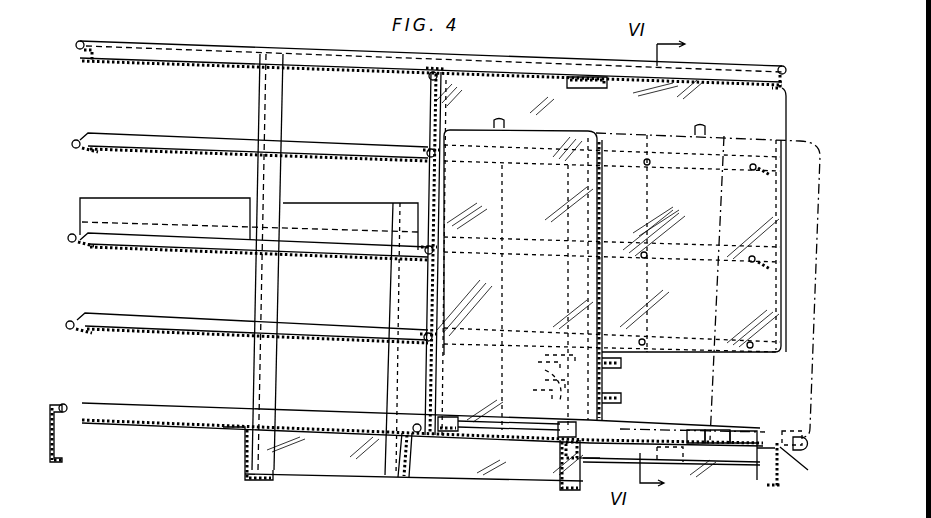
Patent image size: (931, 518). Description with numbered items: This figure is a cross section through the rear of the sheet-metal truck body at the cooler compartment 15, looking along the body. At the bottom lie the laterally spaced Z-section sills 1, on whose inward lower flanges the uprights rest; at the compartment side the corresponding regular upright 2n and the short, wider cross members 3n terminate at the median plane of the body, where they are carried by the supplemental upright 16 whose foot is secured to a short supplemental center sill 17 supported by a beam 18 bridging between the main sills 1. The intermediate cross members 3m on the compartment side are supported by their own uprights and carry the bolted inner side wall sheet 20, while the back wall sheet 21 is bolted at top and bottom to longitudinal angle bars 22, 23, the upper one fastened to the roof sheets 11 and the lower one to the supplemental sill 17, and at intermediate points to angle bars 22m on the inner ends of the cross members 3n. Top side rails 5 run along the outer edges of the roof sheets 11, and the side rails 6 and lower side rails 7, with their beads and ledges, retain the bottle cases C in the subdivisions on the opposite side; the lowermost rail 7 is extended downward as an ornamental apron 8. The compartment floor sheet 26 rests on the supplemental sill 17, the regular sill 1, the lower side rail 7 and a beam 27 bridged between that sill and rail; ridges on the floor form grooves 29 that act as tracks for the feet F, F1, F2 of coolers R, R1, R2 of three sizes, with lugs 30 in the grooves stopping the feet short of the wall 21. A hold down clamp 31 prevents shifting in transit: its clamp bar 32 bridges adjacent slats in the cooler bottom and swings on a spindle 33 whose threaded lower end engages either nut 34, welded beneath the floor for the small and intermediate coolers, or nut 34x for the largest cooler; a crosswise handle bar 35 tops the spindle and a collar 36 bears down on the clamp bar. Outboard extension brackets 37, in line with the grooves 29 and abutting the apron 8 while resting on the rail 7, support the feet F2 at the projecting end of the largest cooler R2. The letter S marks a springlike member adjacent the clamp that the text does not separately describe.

The sill 1 is at (243, 457).
The upright 2n is at (284, 107).
The cross member 3n is at (182, 134).
The cross member 3m is at (608, 251).
The top side rail 5 is at (78, 42).
The side rail 6 is at (74, 149).
The lower side rail 7 is at (52, 405).
The apron 8 is at (56, 448).
The roof sheet 11 is at (325, 60).
The compartment 15 is at (552, 90).
The supplemental upright 16 is at (396, 290).
The supplemental center sill 17 is at (410, 457).
The beam 18 is at (345, 455).
The sheet 20 is at (788, 95).
The sheet 21 is at (440, 278).
The longitudinal angle bar 22 is at (427, 74).
The angle bar 22m is at (428, 150).
The longitudinal angle bar 23 is at (413, 426).
The floor sheet 26 is at (656, 428).
The beam 27 is at (727, 458).
The groove 29 is at (733, 430).
The lug 30 is at (436, 433).
The hold down clamp 31 is at (530, 393).
The clamp bar 32 is at (622, 397).
The spindle 33 is at (590, 460).
The nut 34 is at (566, 452).
The nut 34x is at (680, 455).
The manipulating handle bar 35 is at (610, 357).
The collar 36 is at (533, 377).
The outboard extension bracket 37 is at (795, 460).
The bottle case C is at (168, 199).
The foot F is at (470, 436).
The foot F1 is at (698, 428).
The foot F2 is at (792, 430).
The refrigerating cooler R is at (503, 128).
The refrigerating cooler R1 is at (633, 134).
The refrigerating cooler R2 is at (754, 137).
The spring S is at (545, 402).